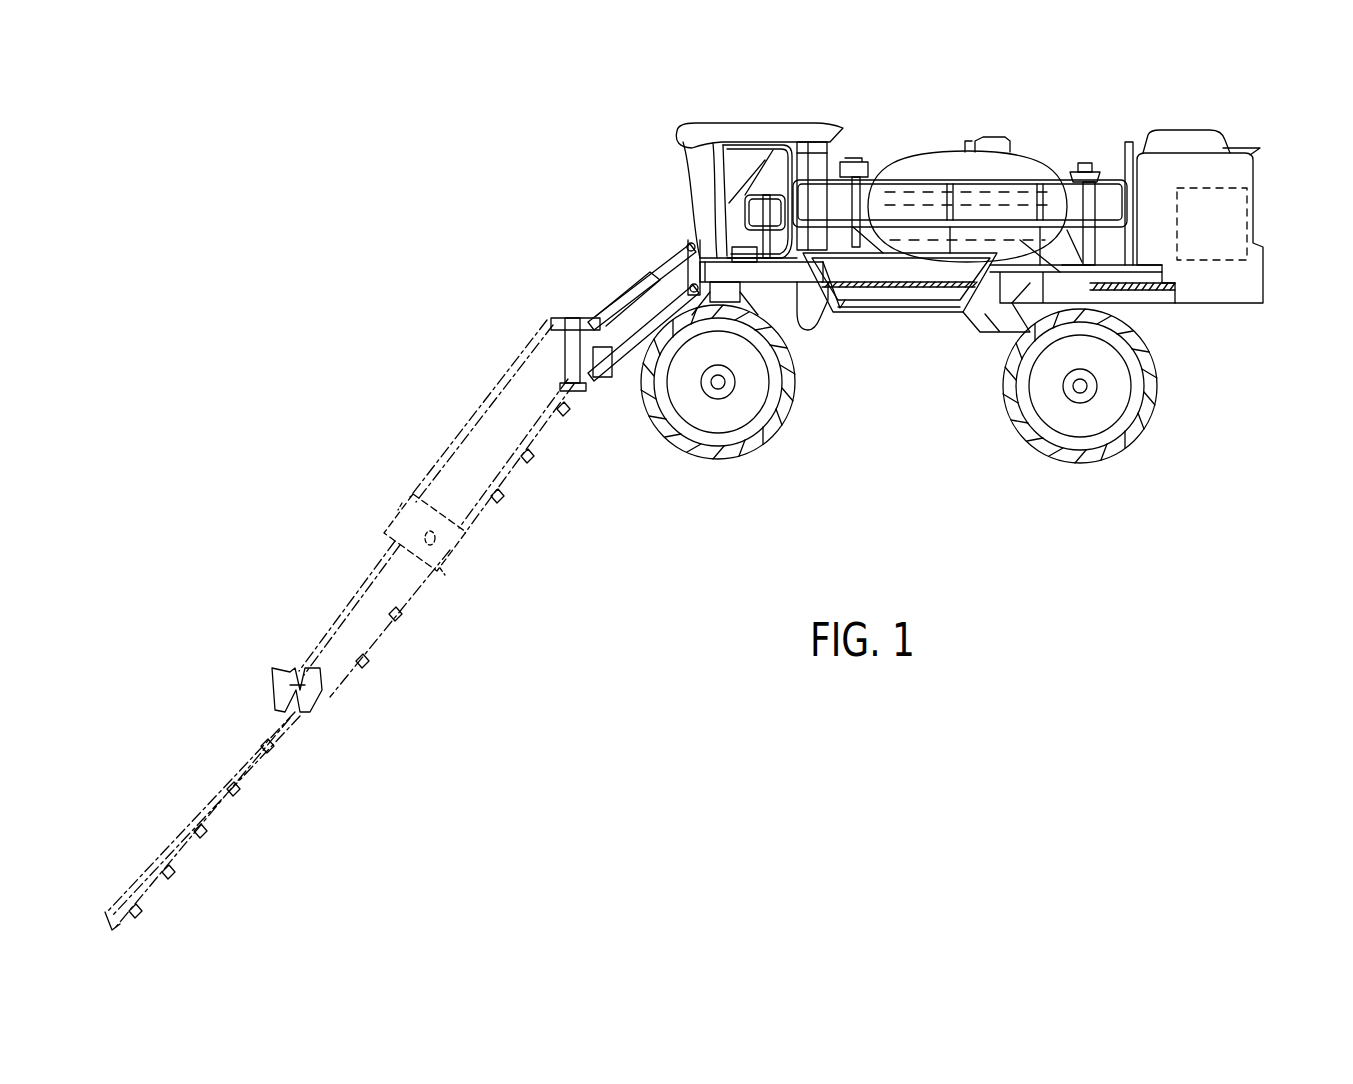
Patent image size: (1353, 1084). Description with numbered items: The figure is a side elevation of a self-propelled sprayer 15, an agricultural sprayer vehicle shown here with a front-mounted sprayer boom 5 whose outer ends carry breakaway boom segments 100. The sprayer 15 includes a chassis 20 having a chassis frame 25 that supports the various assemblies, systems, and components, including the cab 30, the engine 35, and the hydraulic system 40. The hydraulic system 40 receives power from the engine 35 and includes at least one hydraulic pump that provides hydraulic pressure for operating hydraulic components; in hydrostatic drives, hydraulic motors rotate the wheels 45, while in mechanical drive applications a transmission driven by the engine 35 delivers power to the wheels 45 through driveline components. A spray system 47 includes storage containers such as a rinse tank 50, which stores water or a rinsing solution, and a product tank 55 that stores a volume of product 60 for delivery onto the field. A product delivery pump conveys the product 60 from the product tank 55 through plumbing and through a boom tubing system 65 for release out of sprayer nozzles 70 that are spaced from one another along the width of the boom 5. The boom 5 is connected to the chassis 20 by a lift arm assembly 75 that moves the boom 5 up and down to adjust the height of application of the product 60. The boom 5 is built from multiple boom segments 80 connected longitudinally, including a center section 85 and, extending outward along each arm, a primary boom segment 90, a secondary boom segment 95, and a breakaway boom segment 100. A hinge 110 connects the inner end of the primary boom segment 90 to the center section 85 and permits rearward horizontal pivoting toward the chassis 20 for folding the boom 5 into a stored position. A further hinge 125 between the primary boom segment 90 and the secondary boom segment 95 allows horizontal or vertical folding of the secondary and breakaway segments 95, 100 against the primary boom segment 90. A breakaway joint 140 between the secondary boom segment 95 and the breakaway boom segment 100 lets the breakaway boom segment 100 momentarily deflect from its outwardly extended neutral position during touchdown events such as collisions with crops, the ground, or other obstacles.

The sprayer boom 5 is at (394, 396).
The self-propelled sprayer 15 is at (975, 97).
The chassis 20 is at (915, 318).
The chassis frame 25 is at (988, 345).
The cab 30 is at (758, 118).
The engine 35 is at (1222, 205).
The hydraulic system 40 is at (1152, 235).
The wheels 45 is at (760, 446).
The spray system 47 is at (1048, 140).
The rinse tank 50 is at (1090, 166).
The product tank 55 is at (937, 140).
The product 60 is at (900, 198).
The boom tubing system 65 is at (530, 460).
The sprayer nozzles 70 is at (458, 540).
The lift arm assembly 75 is at (668, 263).
The boom segments 80 is at (384, 456).
The center section 85 is at (568, 296).
The primary boom segment 90 is at (440, 450).
The secondary boom segment 95 is at (357, 560).
The breakaway boom segment 100 is at (180, 795).
The hinge 110 is at (558, 365).
The hinge 125 is at (452, 568).
The breakaway joint 140 is at (313, 730).